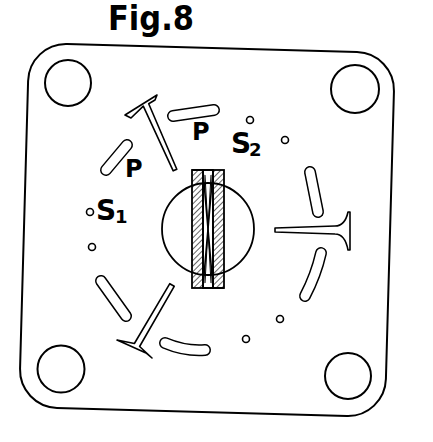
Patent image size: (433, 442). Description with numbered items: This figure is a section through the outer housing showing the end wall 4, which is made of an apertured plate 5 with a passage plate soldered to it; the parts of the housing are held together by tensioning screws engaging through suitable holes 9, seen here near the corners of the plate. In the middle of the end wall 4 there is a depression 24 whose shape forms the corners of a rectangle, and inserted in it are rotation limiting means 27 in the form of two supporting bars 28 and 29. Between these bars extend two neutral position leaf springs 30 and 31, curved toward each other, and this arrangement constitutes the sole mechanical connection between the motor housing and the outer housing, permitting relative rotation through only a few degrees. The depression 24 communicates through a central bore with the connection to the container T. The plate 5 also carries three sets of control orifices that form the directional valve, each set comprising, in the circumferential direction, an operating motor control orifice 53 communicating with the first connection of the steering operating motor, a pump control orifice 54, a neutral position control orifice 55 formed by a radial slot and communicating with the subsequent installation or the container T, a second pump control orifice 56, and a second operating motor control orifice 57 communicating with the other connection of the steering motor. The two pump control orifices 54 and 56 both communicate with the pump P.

The end wall 4 is at (335, 45).
The apertured plate 5 is at (98, 53).
The holes 9 is at (363, 90).
The depression 24 is at (237, 217).
The rotation limiting means 27 is at (231, 254).
The supporting bar 28 is at (192, 230).
The supporting bar 29 is at (224, 236).
The neutral position leaf spring 30 is at (224, 289).
The neutral position leaf spring 31 is at (193, 289).
The operating motor control orifice 53 is at (86, 212).
The pump control orifice 54 is at (128, 140).
The neutral position control orifice 55 is at (152, 110).
The pump control orifice 56 is at (214, 112).
The operating motor control orifice 57 is at (254, 117).